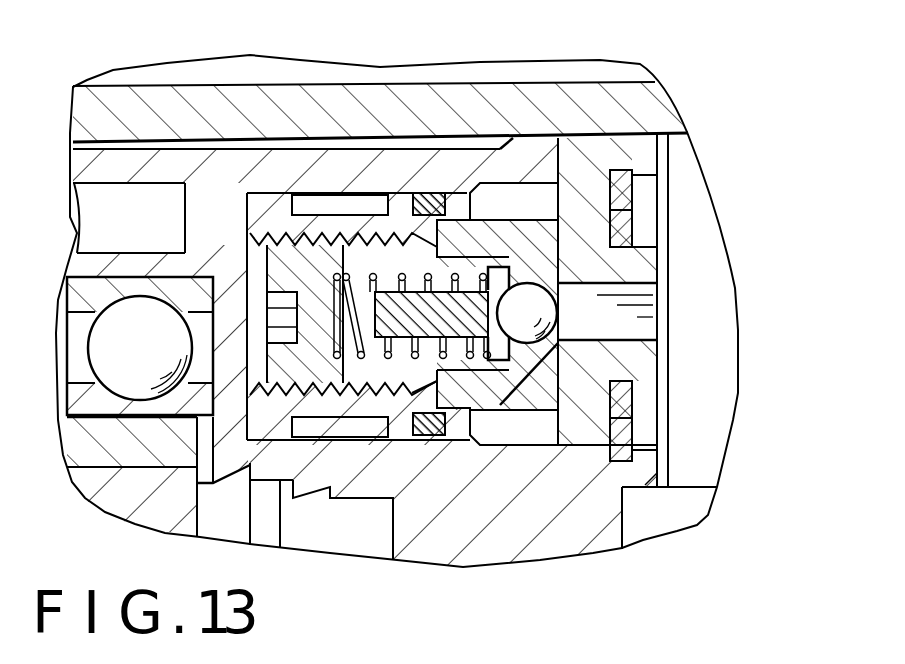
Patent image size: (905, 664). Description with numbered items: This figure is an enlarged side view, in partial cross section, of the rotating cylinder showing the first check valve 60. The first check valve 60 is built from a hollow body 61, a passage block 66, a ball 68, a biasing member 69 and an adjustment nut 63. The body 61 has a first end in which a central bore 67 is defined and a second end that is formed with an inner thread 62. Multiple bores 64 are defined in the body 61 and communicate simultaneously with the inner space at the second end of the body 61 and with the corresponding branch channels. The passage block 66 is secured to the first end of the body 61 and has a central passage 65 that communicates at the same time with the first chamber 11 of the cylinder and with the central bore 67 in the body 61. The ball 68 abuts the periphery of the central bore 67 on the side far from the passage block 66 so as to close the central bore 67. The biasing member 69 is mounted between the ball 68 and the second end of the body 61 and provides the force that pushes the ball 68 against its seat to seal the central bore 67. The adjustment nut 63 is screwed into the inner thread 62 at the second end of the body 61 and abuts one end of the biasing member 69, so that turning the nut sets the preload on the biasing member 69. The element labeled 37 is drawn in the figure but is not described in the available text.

The first chamber 11 is at (705, 466).
The retaining ring 37 is at (617, 173).
The first check valve 60 is at (377, 182).
The hollow body 61 is at (273, 215).
The inner thread 62 is at (340, 392).
The adjustment nut 63 is at (280, 263).
The bores 64 is at (383, 232).
The central passage 65 is at (636, 283).
The passage block 66 is at (647, 367).
The central bore 67 is at (560, 328).
The ball 68 is at (527, 293).
The biasing member 69 is at (457, 277).